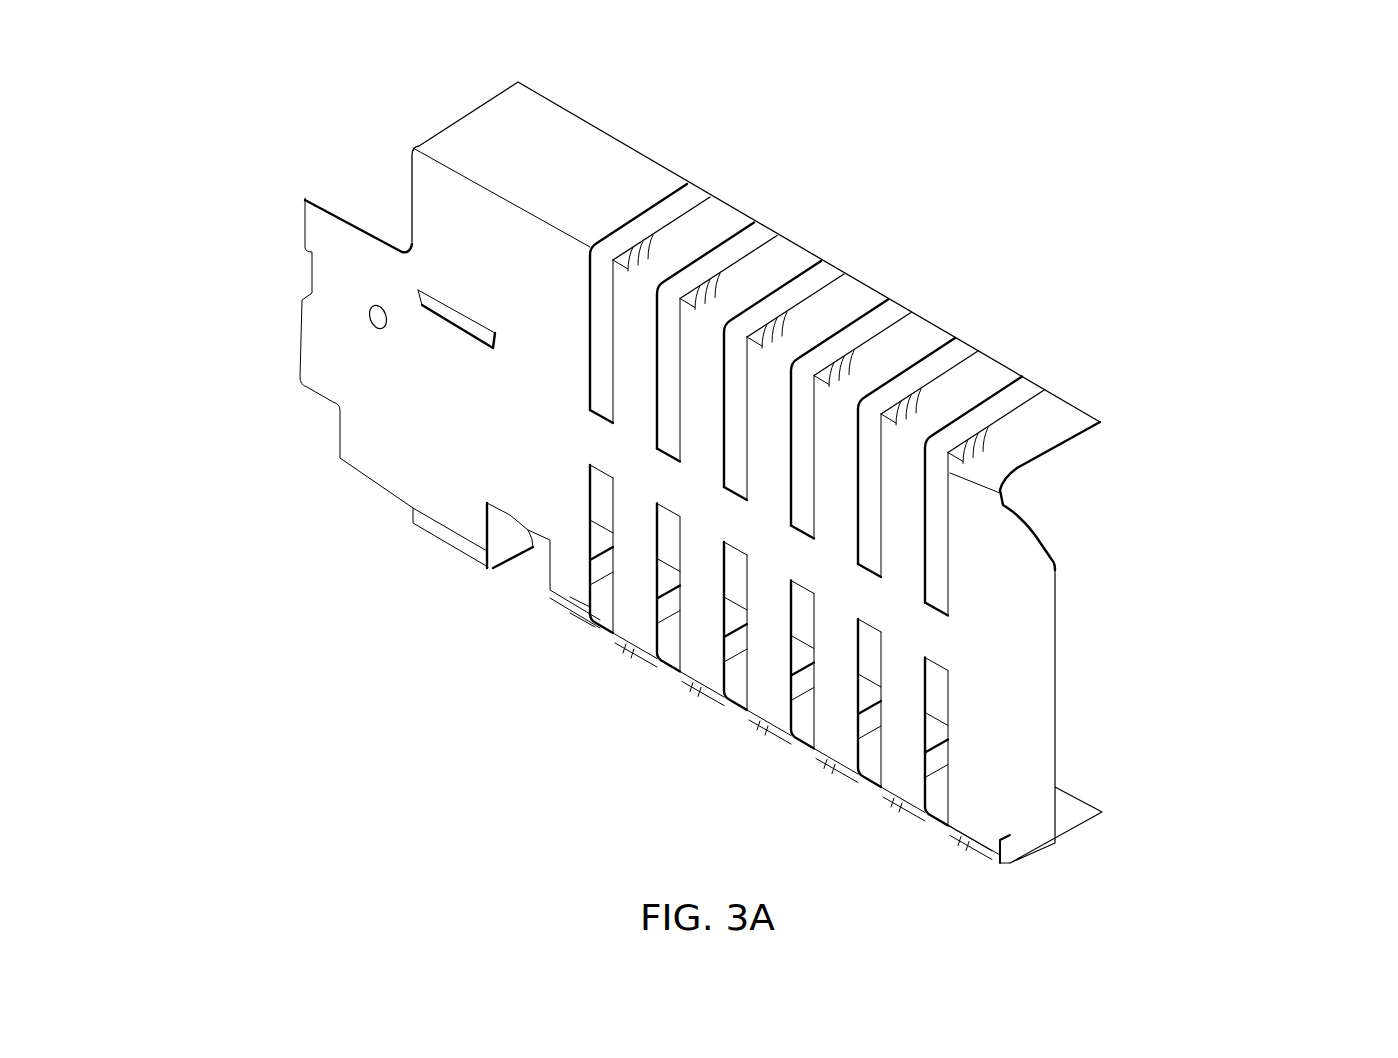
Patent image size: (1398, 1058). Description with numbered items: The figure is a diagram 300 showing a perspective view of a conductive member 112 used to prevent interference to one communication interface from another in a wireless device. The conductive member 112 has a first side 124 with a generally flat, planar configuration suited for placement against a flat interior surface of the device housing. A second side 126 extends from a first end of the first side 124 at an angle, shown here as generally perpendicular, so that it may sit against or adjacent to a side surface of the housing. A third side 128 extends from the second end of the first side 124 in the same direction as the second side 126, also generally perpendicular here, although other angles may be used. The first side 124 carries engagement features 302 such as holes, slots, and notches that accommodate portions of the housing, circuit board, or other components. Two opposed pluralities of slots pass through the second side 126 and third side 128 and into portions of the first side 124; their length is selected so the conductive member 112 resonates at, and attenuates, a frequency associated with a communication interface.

The diagram 300 is at (1285, 72).
The conductive member 112 is at (701, 468).
The first side 124 is at (422, 425).
The second side 126 is at (452, 545).
The third side 128 is at (552, 173).
The engagement features 302 is at (507, 518).